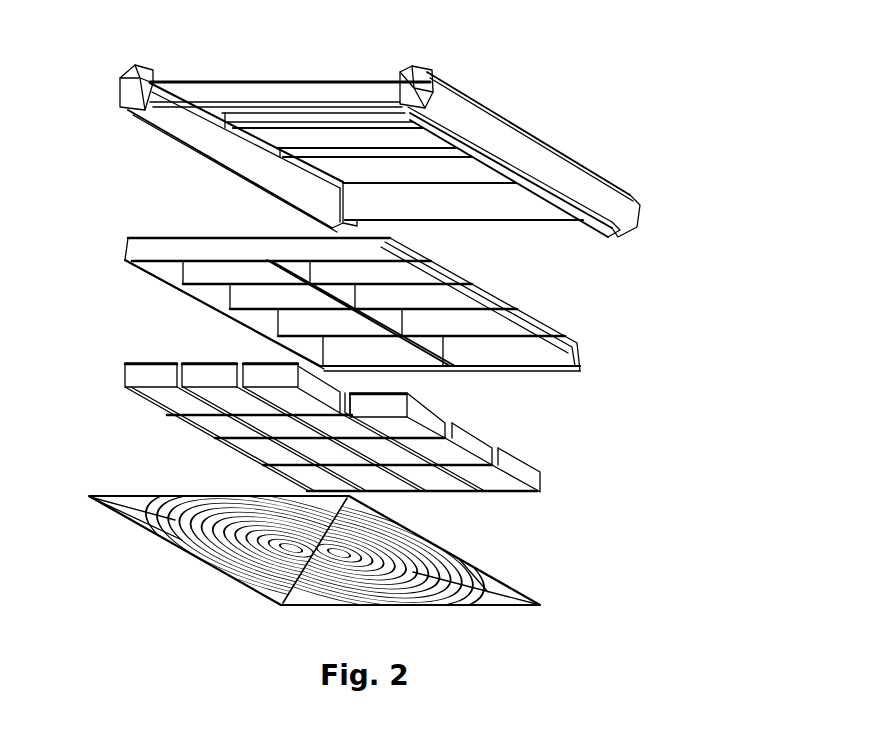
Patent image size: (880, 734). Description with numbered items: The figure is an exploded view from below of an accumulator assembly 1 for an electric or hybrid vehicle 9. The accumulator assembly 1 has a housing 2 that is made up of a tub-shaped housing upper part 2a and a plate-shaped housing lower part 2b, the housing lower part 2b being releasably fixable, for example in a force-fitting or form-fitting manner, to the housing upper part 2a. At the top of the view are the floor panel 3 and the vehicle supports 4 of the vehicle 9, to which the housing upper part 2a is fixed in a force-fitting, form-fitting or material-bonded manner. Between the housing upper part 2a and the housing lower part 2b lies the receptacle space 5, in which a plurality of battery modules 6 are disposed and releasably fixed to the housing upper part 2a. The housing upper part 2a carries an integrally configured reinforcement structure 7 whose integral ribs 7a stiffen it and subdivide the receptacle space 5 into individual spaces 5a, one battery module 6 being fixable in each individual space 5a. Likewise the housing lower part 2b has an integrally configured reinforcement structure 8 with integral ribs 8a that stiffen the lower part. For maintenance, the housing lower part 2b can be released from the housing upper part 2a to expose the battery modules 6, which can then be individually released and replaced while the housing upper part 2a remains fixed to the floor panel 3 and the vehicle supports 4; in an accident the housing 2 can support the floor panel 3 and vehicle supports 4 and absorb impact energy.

The accumulator assembly 1 is at (358, 392).
The housing 2 is at (334, 392).
The housing upper part 2a is at (351, 271).
The housing lower part 2b is at (328, 487).
The floor panel 3 is at (428, 142).
The vehicle supports 4 is at (560, 175).
The receptacle space 5 is at (462, 328).
The individual spaces 5a is at (520, 358).
The battery modules 6 is at (450, 453).
The reinforcement structure 7 is at (366, 271).
The ribs 7a is at (229, 272).
The reinforcement structure 8 is at (336, 551).
The ribs 8a is at (487, 590).
The electric or hybrid vehicle 9 is at (391, 134).